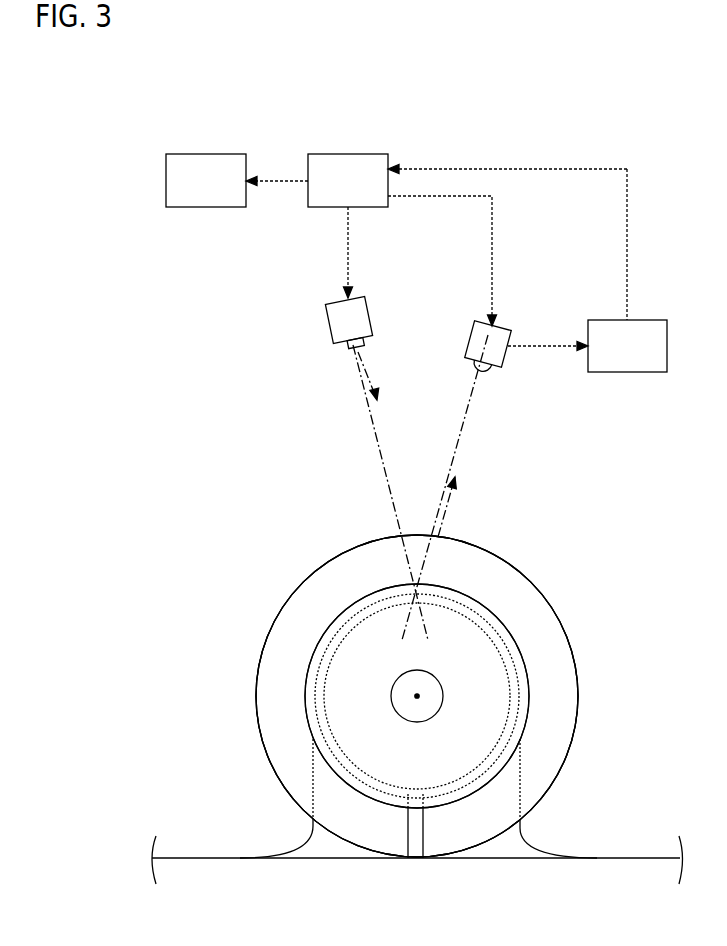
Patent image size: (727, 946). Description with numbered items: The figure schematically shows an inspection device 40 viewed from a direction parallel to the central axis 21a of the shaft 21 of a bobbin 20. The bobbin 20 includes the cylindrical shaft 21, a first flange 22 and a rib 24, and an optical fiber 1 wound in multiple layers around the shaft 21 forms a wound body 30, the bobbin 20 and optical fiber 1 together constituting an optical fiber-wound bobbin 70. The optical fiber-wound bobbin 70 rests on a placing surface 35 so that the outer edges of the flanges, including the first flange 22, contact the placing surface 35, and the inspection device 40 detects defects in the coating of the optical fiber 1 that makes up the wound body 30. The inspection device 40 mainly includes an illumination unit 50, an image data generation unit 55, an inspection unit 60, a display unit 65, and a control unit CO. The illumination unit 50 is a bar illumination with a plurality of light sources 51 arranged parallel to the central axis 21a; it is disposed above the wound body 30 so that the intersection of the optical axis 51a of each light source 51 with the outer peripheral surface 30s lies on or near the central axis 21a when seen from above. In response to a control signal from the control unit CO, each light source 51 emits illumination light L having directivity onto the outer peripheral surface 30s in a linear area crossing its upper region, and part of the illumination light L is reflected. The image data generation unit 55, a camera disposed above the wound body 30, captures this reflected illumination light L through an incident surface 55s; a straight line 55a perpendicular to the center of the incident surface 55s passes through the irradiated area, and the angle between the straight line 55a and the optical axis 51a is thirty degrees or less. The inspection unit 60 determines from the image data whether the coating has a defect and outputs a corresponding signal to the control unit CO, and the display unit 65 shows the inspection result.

The inspection device 40 is at (137, 119).
The display unit 65 is at (220, 165).
The control unit CO is at (358, 163).
The illumination unit 50 is at (340, 323).
The light source 51 is at (350, 345).
The illumination light L is at (370, 370).
The optical axis 51a is at (370, 430).
The image data generation unit 55 is at (477, 338).
The incident surface 55s is at (484, 368).
The straight line 55a is at (470, 412).
The inspection unit 60 is at (645, 363).
The optical fiber-wound bobbin 70 is at (239, 522).
The wound body 30 is at (348, 603).
The outer peripheral surface 30s is at (380, 595).
The bobbin 20 is at (270, 605).
The shaft 21 is at (330, 660).
The central axis 21a is at (417, 696).
The rib 24 is at (518, 658).
The first flange 22 is at (557, 701).
The optical fiber 1 is at (303, 845).
The placing surface 35 is at (492, 858).